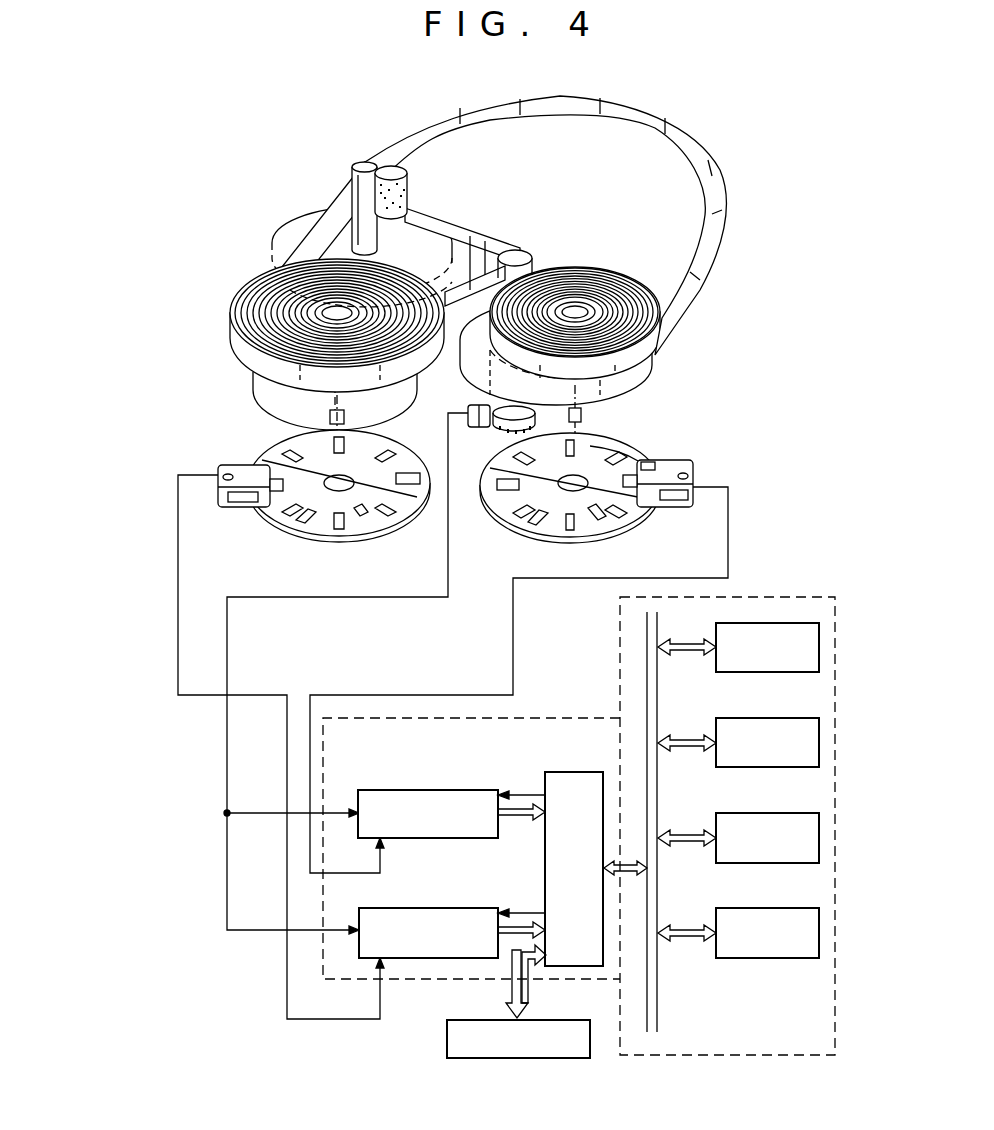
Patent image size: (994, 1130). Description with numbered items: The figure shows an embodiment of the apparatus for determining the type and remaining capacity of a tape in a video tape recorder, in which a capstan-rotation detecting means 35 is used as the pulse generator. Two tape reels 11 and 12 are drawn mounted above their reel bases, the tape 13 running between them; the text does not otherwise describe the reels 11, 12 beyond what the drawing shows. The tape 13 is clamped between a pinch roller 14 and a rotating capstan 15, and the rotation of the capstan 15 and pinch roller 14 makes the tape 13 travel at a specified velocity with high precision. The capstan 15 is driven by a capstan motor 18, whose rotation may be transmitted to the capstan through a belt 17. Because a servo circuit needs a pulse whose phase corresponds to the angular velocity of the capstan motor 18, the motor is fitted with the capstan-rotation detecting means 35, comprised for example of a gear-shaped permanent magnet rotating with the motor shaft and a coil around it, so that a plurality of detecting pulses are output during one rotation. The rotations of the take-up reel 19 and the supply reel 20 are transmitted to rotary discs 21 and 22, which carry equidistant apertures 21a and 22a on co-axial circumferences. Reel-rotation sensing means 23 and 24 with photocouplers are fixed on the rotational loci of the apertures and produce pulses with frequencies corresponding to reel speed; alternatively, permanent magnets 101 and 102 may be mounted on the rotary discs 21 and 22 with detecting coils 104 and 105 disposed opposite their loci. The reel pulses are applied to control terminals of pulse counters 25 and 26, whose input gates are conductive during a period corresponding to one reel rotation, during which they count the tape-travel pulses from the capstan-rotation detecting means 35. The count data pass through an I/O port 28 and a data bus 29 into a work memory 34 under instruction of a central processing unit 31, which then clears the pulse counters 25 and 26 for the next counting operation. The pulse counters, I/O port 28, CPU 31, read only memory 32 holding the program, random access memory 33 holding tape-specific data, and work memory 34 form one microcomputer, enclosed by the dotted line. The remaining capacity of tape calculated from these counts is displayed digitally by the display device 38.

The take-up tape reel 11 is at (575, 300).
The supply tape reel 12 is at (252, 288).
The tape 13 is at (547, 102).
The pinch roller 14 is at (406, 192).
The capstan 15 is at (361, 165).
The belt 17 is at (497, 248).
The capstan motor 18 is at (468, 382).
The take-up reel 19 is at (654, 366).
The supply reel 20 is at (262, 384).
The rotary disc 21 is at (571, 492).
The aperture 21a is at (590, 448).
The rotary disc 22 is at (342, 488).
The aperture 22a is at (408, 471).
The reel-rotation sensing means 23 is at (660, 448).
The reel-rotation sensing means 24 is at (244, 488).
The pulse counter 25 is at (434, 790).
The pulse counter 26 is at (436, 907).
The I/O port 28 is at (577, 773).
The data bus 29 is at (647, 742).
The central processing unit 31 is at (765, 673).
The read only memory 32 is at (765, 768).
The random access memory 33 is at (765, 864).
The work memory 34 is at (767, 960).
The capstan-rotation detecting means 35 is at (497, 427).
The display device 38 is at (520, 1060).
The permanent magnet 101 is at (600, 522).
The permanent magnet 102 is at (384, 516).
The detecting coil 104 is at (648, 458).
The detecting coil 105 is at (258, 500).